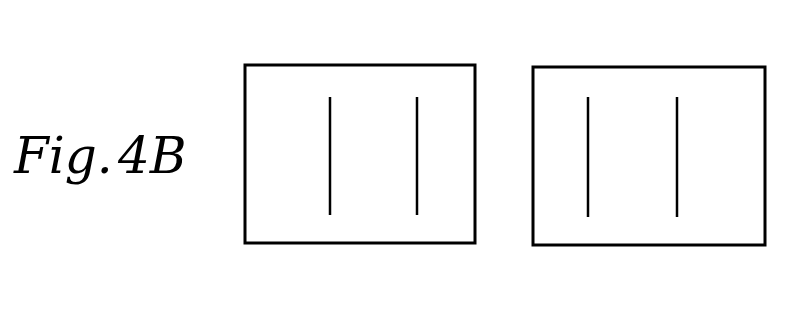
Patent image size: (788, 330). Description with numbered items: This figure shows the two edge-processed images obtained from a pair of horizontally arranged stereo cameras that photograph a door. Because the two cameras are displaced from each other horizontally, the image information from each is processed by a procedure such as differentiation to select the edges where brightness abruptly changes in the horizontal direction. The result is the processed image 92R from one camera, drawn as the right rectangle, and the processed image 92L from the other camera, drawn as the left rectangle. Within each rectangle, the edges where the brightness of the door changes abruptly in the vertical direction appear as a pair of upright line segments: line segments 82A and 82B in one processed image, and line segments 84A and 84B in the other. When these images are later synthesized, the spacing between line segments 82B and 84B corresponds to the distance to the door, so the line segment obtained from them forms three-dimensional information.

The line segment 82A is at (328, 104).
The line segment 82B is at (416, 104).
The line segment 84A is at (592, 106).
The line segment 84B is at (680, 106).
The image processed by left camera 92L is at (307, 243).
The image processed by right camera 92R is at (700, 245).